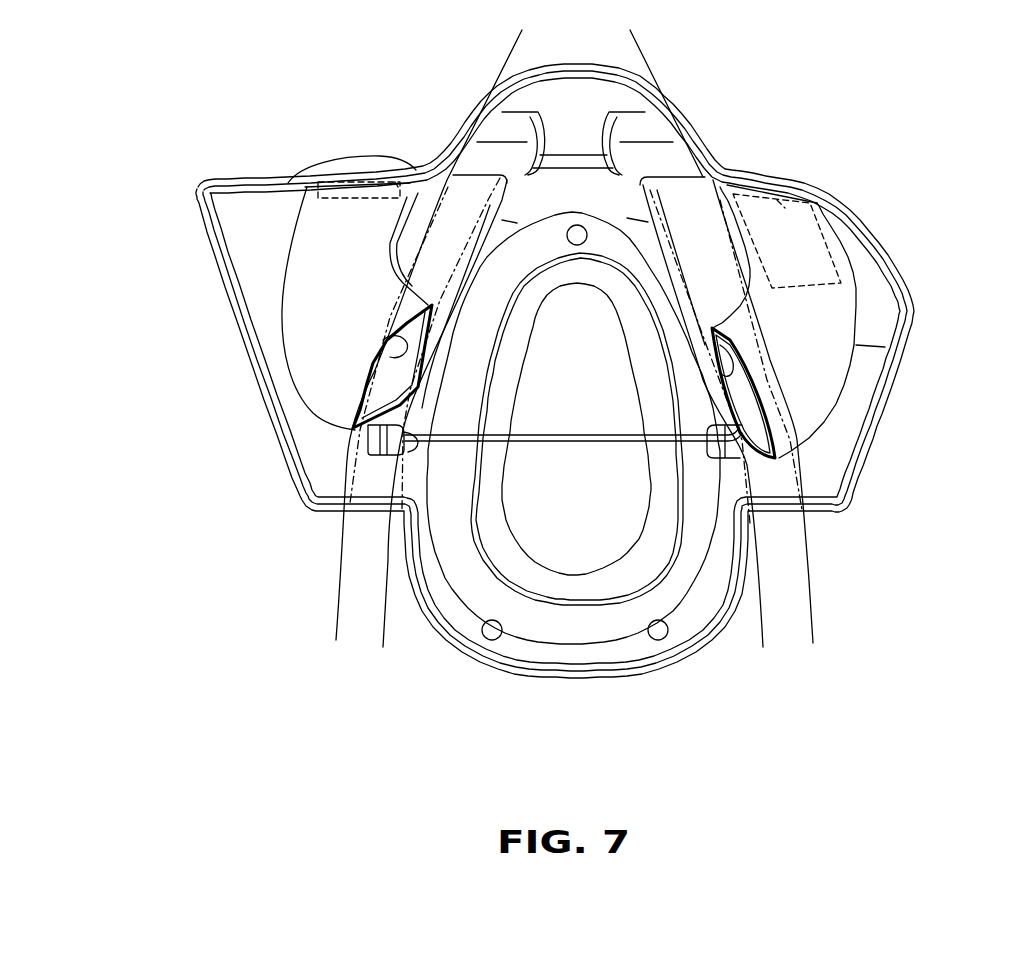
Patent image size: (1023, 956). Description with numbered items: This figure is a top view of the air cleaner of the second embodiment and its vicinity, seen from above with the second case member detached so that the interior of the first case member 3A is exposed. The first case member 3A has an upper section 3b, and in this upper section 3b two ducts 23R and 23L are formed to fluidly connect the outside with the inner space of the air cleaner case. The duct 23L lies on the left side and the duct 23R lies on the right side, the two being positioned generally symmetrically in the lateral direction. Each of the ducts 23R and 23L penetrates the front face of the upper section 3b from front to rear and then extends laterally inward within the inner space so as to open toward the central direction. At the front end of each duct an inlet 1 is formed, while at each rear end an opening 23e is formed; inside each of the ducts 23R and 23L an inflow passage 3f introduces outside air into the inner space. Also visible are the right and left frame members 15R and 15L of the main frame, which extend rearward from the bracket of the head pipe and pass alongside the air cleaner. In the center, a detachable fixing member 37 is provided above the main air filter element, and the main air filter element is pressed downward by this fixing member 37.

The inlet 1 is at (380, 185).
The first case member 3A is at (848, 497).
The upper section 3b is at (571, 371).
The inflow passage 3f is at (393, 380).
The left frame member 15L is at (332, 598).
The right frame member 15R is at (813, 603).
The duct 23L is at (290, 248).
The duct 23R is at (858, 322).
The opening 23e is at (382, 345).
The fixing member 37 is at (557, 441).